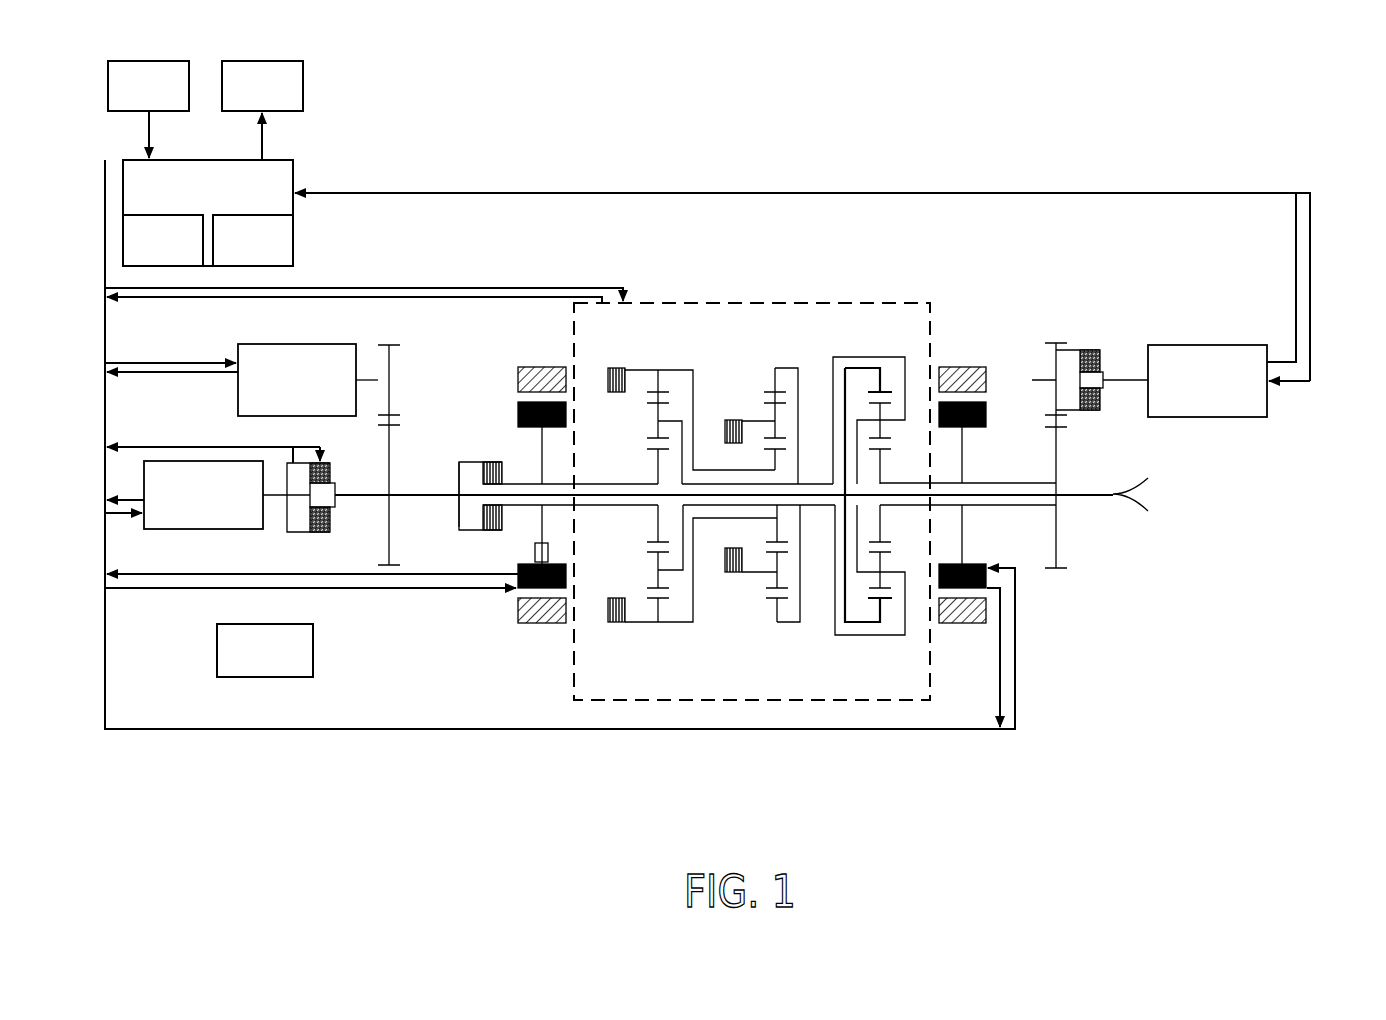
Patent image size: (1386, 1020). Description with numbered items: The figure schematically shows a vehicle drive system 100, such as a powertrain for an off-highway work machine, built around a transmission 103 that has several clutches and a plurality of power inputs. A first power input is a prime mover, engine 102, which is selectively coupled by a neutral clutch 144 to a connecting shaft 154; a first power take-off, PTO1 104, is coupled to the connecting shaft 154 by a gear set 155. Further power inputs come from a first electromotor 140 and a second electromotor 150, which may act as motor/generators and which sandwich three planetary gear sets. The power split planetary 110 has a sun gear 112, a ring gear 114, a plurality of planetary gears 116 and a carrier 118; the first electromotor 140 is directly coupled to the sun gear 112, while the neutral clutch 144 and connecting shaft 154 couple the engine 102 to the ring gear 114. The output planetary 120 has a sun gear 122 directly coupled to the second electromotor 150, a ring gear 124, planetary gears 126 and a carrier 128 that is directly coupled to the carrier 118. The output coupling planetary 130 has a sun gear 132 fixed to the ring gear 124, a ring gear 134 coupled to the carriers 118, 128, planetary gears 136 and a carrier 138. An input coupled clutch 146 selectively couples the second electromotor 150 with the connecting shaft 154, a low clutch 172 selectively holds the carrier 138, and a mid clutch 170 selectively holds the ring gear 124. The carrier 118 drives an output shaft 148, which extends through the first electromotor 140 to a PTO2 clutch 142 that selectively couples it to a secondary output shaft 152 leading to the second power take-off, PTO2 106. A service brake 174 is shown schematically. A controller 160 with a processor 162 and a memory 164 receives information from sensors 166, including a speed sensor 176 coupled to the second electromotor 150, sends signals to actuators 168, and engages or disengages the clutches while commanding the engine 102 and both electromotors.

The drive system 100 is at (1300, 68).
The engine 102 is at (170, 530).
The transmission 103 is at (695, 303).
The first power take-off (PTO1) 104 is at (280, 344).
The second power take-off (PTO2) 106 is at (1218, 345).
The power split planetary 110 is at (871, 513).
The sun gear 112 is at (884, 450).
The ring gear 114 is at (880, 390).
The planetary gears 116 is at (880, 424).
The carrier 118 is at (835, 608).
The output planetary 120 is at (677, 514).
The sun gear 122 is at (658, 455).
The ring gear 124 is at (658, 392).
The planetary gears 126 is at (656, 437).
The carrier 128 is at (682, 570).
The output coupling planetary 130 is at (755, 519).
The sun gear 132 is at (774, 455).
The ring gear 134 is at (774, 392).
The planetary gears 136 is at (774, 420).
The carrier 138 is at (757, 571).
The first electromotor 140 is at (962, 358).
The secondary output clutch (PTO2 clutch) 142 is at (1090, 426).
The neutral clutch 144 is at (324, 544).
The input coupled clutch 146 is at (480, 546).
The output shaft 148 is at (1070, 494).
The second electromotor 150 is at (545, 358).
The secondary output shaft 152 is at (1120, 380).
The connecting shaft 154 is at (400, 492).
The gear set 155 is at (412, 392).
The controller 160 is at (283, 160).
The processor 162 is at (163, 240).
The memory 164 is at (253, 240).
The sensors 166 is at (148, 109).
The actuators 168 is at (262, 110).
The mid clutch 170 is at (622, 624).
The low clutch 172 is at (740, 574).
The service brake 174 is at (265, 650).
The speed sensor 176 is at (533, 553).